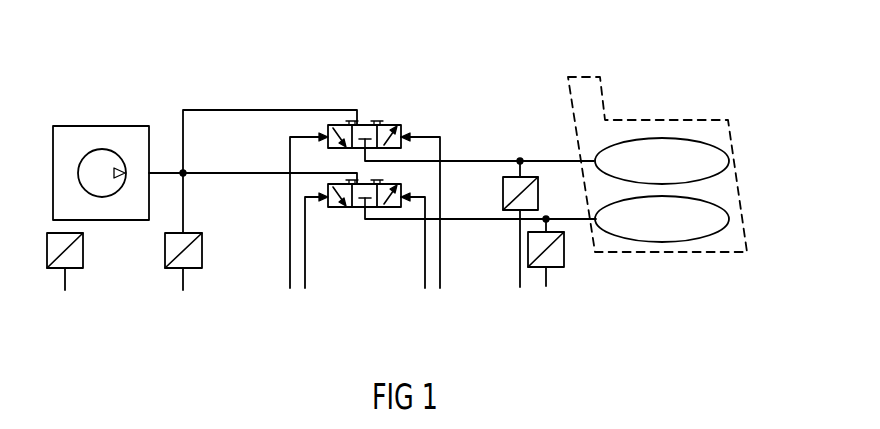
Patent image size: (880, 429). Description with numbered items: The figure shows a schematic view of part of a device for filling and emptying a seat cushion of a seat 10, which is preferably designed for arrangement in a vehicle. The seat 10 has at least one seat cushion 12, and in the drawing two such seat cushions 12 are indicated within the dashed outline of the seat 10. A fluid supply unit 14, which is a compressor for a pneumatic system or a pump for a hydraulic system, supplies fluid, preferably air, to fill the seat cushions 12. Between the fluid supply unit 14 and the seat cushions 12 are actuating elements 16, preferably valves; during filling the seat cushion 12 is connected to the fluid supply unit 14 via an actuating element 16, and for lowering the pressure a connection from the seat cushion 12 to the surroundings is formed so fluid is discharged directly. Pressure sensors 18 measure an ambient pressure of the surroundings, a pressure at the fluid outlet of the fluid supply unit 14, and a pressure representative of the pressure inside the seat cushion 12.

The seat 10 is at (603, 88).
The seat cushion 12 is at (683, 138).
The fluid supply unit 14 is at (99, 126).
The actuating element 16 is at (363, 125).
The pressure sensor 18 is at (83, 252).